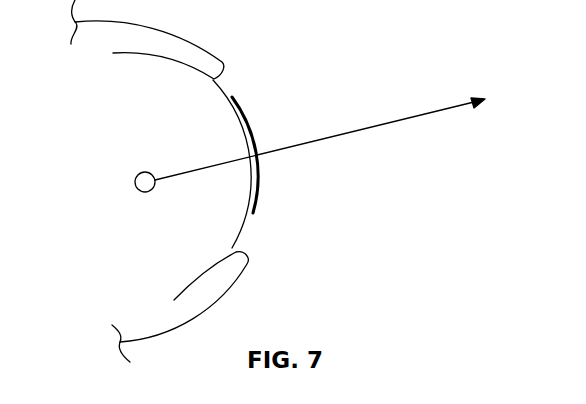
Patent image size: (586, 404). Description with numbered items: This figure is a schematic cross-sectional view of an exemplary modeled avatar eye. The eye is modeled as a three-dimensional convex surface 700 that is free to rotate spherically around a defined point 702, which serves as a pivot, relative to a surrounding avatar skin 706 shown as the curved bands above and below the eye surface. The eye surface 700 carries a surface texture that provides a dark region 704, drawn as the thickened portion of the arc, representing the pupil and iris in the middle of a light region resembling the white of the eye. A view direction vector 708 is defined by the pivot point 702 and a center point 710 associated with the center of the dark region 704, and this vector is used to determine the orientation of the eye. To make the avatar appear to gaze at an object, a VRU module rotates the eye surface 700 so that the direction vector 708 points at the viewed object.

The three-dimensional convex surface 700 is at (142, 54).
The defined point 702 is at (145, 193).
The dark region 704 is at (259, 183).
The surrounding avatar skin 706 is at (233, 287).
The view direction vector 708 is at (405, 116).
The center point 710 is at (248, 155).